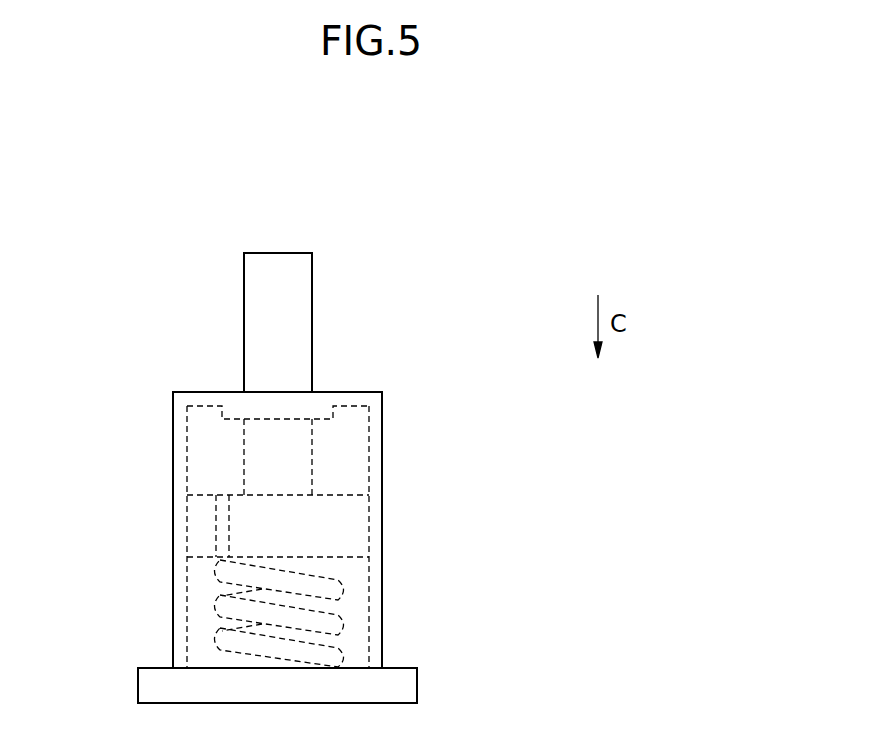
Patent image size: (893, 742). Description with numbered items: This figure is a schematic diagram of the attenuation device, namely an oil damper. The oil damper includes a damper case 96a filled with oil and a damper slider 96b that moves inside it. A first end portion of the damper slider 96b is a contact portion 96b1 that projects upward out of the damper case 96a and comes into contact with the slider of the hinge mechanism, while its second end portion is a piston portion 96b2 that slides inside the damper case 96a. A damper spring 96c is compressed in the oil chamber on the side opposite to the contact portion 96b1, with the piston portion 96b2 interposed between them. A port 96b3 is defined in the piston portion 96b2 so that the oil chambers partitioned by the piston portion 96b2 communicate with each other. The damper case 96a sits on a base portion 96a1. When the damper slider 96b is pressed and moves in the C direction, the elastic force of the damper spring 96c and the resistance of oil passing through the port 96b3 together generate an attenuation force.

The damper case 96a is at (382, 392).
The base portion of case 96a1 is at (408, 683).
The damper slider 96b is at (281, 389).
The contact portion 96b1 is at (303, 263).
The piston portion 96b2 is at (343, 525).
The port 96b3 is at (219, 537).
The damper spring 96c is at (337, 582).